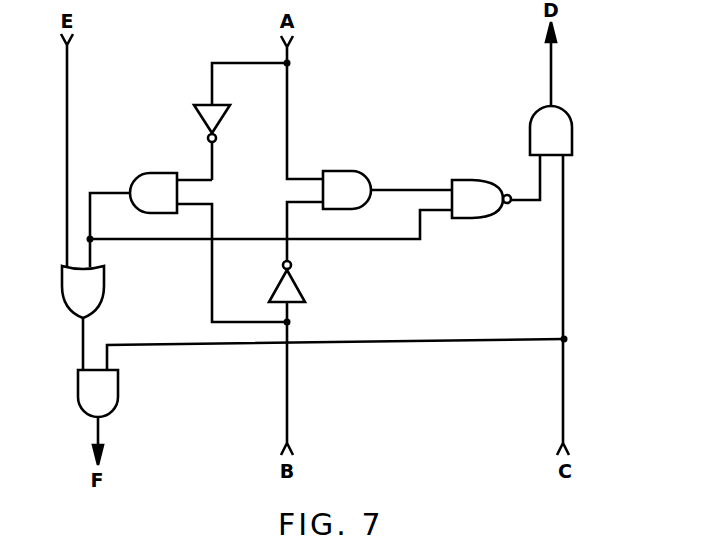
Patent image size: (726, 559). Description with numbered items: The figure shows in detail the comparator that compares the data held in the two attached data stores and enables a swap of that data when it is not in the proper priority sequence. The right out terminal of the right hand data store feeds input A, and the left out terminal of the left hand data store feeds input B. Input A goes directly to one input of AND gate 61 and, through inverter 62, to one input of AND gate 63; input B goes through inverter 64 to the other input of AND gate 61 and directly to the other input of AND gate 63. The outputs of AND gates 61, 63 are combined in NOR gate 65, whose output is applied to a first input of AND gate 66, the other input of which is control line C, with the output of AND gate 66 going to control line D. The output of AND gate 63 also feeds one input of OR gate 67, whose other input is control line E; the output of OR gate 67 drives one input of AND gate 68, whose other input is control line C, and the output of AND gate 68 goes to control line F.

The AND gate 61 is at (348, 176).
The inverter 62 is at (203, 117).
The AND gate 63 is at (160, 177).
The inverter 64 is at (291, 290).
The NOR gate 65 is at (476, 212).
The AND gate 66 is at (560, 128).
The OR gate 67 is at (92, 286).
The AND gate 68 is at (110, 388).